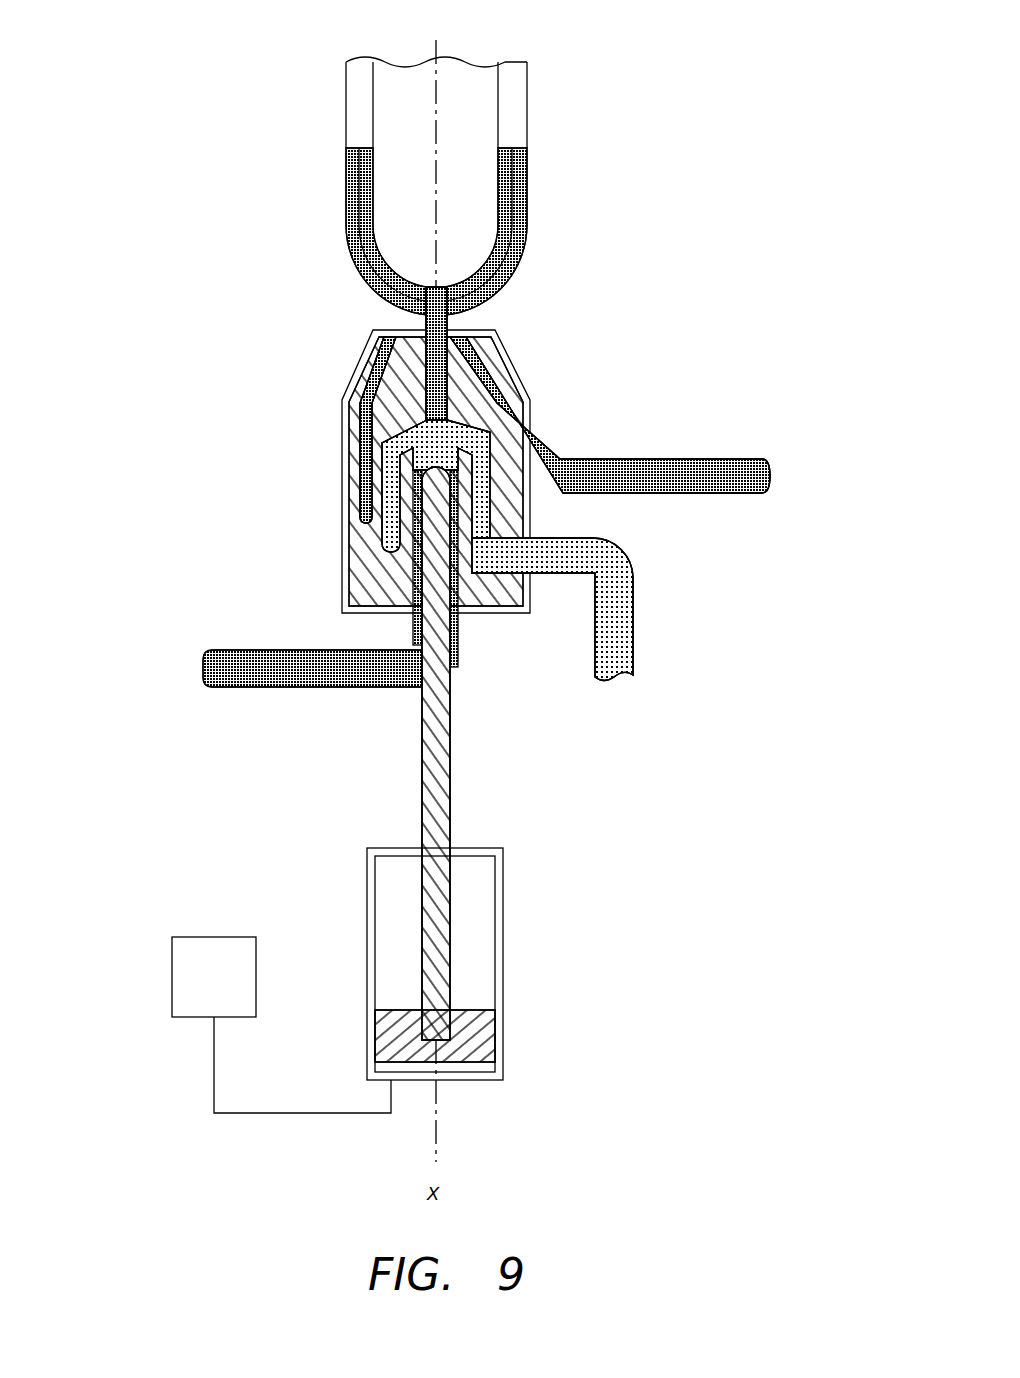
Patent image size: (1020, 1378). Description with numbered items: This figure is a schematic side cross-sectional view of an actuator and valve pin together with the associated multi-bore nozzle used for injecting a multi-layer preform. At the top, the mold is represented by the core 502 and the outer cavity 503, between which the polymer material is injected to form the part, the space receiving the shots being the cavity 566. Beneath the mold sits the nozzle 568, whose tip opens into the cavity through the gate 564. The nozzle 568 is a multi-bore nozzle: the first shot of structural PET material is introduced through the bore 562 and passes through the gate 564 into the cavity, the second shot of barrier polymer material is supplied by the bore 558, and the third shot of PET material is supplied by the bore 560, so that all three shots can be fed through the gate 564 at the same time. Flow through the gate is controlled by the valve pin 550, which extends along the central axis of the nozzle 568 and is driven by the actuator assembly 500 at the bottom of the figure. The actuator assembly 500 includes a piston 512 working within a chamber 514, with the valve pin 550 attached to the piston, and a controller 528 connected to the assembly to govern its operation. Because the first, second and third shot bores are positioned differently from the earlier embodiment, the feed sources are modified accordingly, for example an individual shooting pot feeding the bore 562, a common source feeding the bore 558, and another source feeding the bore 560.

The actuator assembly 500 is at (507, 846).
The core 502 is at (455, 76).
The outer cavity 503 is at (680, 234).
The piston 512 is at (405, 1010).
The chamber 514 is at (478, 948).
The controller 528 is at (172, 937).
The valve pin 550 is at (450, 763).
The bore 558 is at (348, 488).
The bore 560 is at (478, 590).
The bore 562 is at (500, 398).
The gate 564 is at (380, 318).
The cavity 566 is at (514, 108).
The nozzle 568 is at (352, 366).